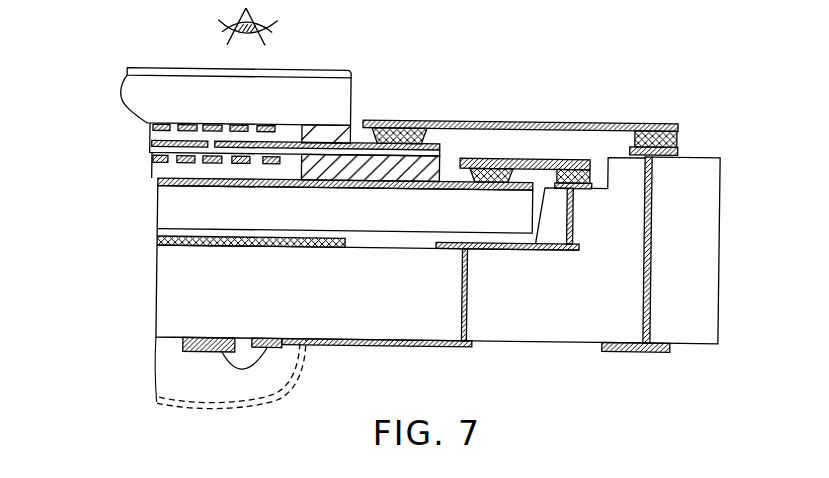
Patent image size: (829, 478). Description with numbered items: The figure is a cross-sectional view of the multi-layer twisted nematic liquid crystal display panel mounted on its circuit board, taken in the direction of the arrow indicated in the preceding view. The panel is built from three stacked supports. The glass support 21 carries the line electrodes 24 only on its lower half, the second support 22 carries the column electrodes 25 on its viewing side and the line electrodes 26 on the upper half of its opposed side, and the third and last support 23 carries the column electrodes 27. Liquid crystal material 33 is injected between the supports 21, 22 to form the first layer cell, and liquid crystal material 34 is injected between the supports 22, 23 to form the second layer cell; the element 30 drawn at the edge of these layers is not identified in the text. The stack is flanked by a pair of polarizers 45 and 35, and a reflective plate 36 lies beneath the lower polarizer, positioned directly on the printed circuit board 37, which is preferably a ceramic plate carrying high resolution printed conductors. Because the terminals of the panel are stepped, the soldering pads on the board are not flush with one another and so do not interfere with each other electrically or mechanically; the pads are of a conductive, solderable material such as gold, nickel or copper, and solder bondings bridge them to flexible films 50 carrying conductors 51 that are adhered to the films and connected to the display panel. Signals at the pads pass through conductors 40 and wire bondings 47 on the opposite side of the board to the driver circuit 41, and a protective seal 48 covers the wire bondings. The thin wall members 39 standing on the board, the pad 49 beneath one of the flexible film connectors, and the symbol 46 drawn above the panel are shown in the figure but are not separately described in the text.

The glass support 21 is at (235, 100).
The second support 22 is at (148, 155).
The third support 23 is at (344, 210).
The line electrodes 24 is at (216, 129).
The column electrodes 25 is at (150, 146).
The line electrodes 26 is at (151, 163).
The column electrodes 27 is at (157, 185).
The insulating spacer 30 is at (370, 153).
The liquid crystal material 33 is at (176, 133).
The liquid crystal material 34 is at (178, 165).
The polarizer 35 is at (152, 236).
The reflective plate 36 is at (152, 246).
The printed circuit board 37 is at (399, 326).
The thin wall 39 is at (468, 297).
The conductors 40 is at (507, 249).
The driver circuit 41 is at (193, 355).
The polarizer 45 is at (140, 72).
The light symbol 46 is at (226, 26).
The wire bondings 47 is at (244, 372).
The protective seal 48 is at (275, 405).
The electrode pad 49 is at (681, 140).
The flexible films 50 is at (646, 114).
The conductors 51 is at (593, 120).